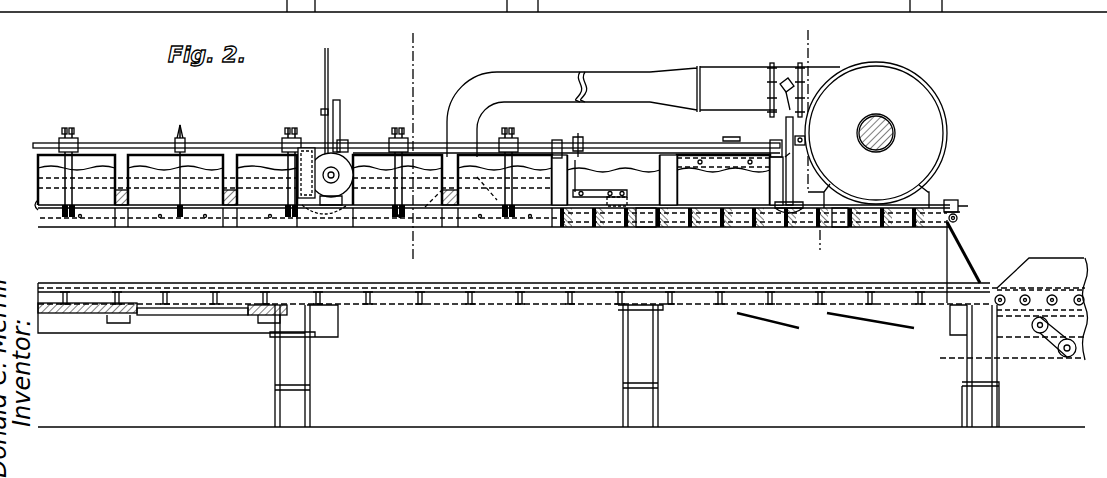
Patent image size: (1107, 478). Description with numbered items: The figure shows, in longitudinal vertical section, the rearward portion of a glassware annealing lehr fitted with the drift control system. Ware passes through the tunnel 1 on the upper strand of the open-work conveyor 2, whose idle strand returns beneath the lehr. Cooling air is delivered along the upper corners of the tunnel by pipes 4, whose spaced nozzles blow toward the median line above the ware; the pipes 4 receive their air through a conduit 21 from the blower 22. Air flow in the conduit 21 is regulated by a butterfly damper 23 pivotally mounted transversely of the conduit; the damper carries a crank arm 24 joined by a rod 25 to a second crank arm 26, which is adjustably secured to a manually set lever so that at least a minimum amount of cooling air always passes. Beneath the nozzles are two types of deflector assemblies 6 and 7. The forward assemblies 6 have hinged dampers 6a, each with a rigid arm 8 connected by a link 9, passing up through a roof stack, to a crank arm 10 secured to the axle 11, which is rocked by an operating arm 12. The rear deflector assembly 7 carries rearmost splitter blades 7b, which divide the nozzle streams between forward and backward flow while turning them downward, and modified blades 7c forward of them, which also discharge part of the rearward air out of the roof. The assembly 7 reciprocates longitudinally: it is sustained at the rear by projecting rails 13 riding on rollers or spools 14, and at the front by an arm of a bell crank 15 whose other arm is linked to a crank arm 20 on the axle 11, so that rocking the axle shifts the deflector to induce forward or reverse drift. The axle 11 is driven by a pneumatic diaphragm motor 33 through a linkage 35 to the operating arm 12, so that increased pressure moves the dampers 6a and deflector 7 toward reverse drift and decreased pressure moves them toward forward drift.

The tunnel 1 is at (78, 264).
The open-work conveyor 2 is at (578, 291).
The pipes 4 is at (35, 205).
The deflector assemblies 6 is at (164, 234).
The dampers 6a is at (214, 224).
The deflector assembly 7 is at (855, 234).
The rearmost deflector blades 7b is at (845, 229).
The deflector blades 7c is at (640, 229).
The rigid arm 8 is at (181, 216).
The link 9 is at (413, 33).
The crank arm 10 is at (808, 30).
The axle 11 is at (228, 144).
The operating arm 12 is at (340, 120).
The projecting rails 13 is at (959, 211).
The rollers or spools 14 is at (960, 218).
The bell crank 15 is at (627, 197).
The crank arm 20 is at (583, 140).
The conduit 21 is at (502, 73).
The blower 22 is at (932, 107).
The damper 23 is at (772, 54).
The crank arm 24 is at (783, 86).
The rod 25 is at (783, 116).
The second crank arm 26 is at (807, 141).
The diaphragm motor 33 is at (354, 183).
The linkage 35 is at (323, 97).